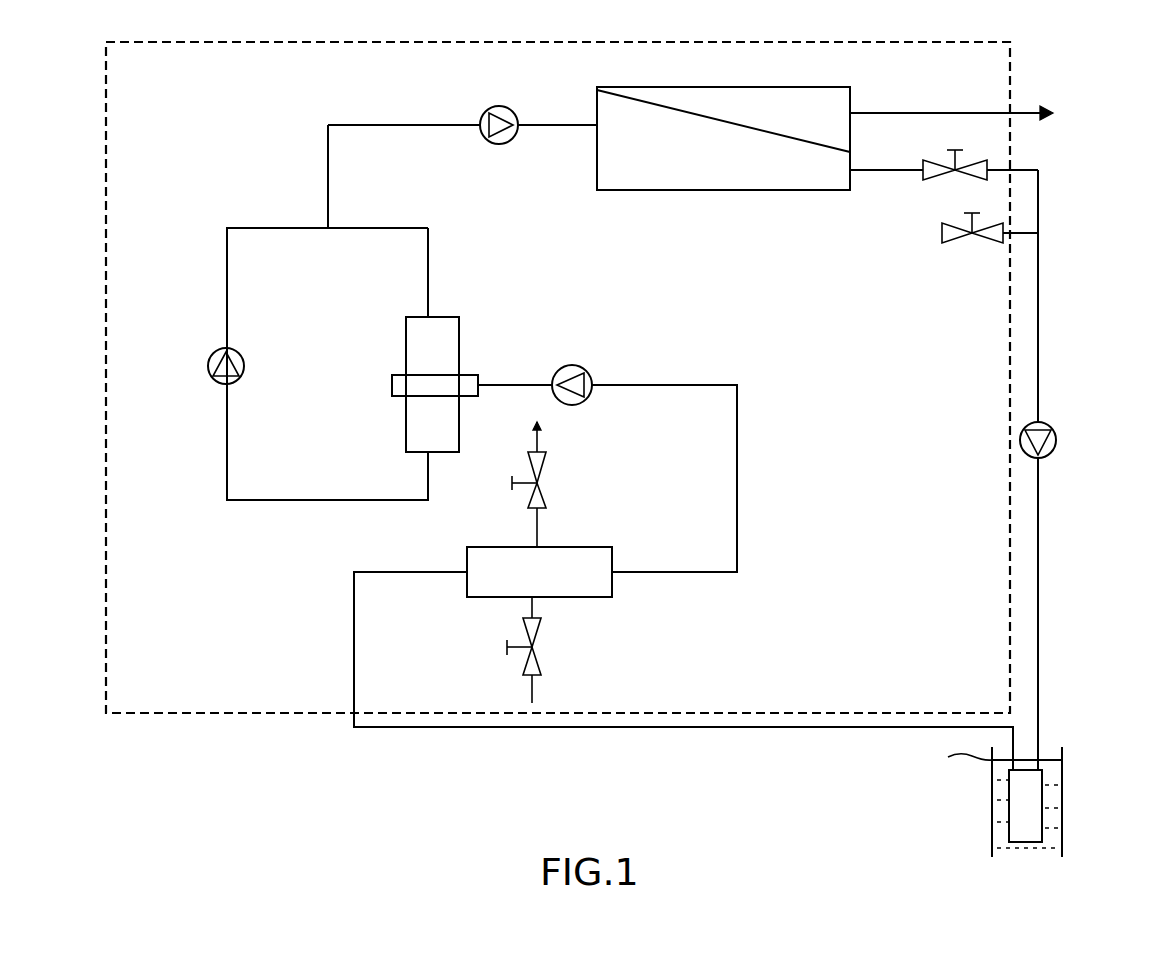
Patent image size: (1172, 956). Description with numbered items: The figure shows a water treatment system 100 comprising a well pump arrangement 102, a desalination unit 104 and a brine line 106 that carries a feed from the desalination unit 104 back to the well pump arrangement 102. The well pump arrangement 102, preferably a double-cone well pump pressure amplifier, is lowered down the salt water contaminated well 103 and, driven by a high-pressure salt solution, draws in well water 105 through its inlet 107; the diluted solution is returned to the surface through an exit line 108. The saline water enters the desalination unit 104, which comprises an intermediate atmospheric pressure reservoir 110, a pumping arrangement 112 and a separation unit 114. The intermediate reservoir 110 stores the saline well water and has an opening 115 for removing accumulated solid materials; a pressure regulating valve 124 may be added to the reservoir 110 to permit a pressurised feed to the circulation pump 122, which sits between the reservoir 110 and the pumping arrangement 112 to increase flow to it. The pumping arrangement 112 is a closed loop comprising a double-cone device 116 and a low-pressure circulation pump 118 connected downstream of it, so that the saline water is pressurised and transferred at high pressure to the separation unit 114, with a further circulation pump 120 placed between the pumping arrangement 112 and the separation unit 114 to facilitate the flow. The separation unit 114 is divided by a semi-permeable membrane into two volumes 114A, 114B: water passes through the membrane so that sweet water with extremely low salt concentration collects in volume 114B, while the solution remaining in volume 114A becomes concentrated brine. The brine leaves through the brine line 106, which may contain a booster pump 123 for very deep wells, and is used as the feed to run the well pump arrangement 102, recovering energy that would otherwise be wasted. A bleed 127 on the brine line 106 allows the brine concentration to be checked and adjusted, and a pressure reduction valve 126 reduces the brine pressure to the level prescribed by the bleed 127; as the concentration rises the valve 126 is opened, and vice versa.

The water treatment system 100 is at (86, 337).
The well pump arrangement 102 is at (1043, 805).
The salt water contaminated well 103 is at (1063, 768).
The desalination unit 104 is at (308, 715).
The well water 105 is at (998, 820).
The brine line 106 is at (1040, 228).
The inlet 107 is at (1035, 778).
The exit line 108 is at (620, 730).
The intermediate pressure reservoir 110 is at (572, 545).
The pumping arrangement 112 is at (520, 261).
The separation unit 114 is at (723, 163).
The volume 114A is at (703, 187).
The volume 114B is at (804, 128).
The opening 115 is at (527, 678).
The double-cone device 116 is at (404, 337).
The circulation pump 118 is at (242, 358).
The circulation pump 120 is at (508, 141).
The circulation pump 122 is at (575, 368).
The booster pump 123 is at (1055, 443).
The pressure regulating valve 124 is at (556, 484).
The pressure reduction valve 126 is at (967, 177).
The bleed 127 is at (958, 237).